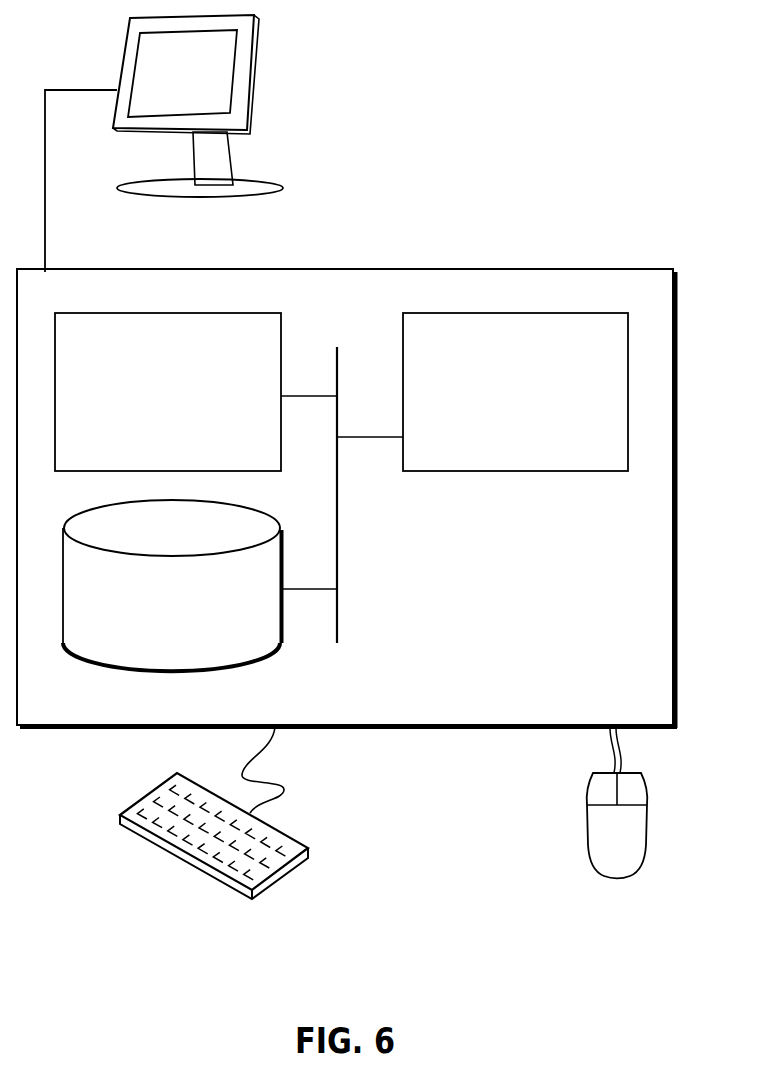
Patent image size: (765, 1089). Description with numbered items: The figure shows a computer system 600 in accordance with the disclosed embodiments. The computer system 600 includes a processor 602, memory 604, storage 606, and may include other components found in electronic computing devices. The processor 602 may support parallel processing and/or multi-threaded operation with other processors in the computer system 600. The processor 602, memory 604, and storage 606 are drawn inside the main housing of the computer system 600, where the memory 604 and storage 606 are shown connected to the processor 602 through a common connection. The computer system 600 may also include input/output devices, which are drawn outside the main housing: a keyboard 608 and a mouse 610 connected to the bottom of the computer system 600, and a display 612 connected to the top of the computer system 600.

The computer system 600 is at (392, 248).
The processor 602 is at (499, 403).
The memory 604 is at (148, 403).
The storage 606 is at (155, 615).
The keyboard 608 is at (137, 837).
The mouse 610 is at (597, 848).
The display 612 is at (198, 121).